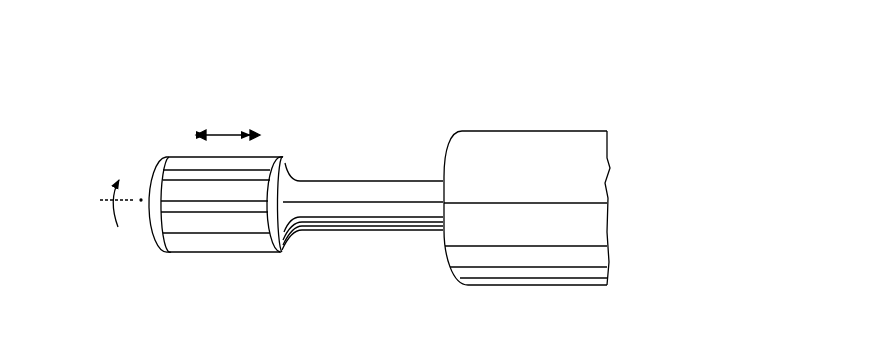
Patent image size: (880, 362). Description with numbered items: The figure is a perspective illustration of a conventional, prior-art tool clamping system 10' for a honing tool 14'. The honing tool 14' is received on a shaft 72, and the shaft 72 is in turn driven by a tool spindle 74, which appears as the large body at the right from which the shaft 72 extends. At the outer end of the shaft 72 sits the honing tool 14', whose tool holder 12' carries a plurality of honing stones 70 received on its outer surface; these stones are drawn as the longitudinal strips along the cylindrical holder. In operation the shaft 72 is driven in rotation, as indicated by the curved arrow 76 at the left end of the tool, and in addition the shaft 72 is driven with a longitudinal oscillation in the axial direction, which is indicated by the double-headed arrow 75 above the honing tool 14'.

The tool clamping system 10' is at (416, 182).
The tool holder 12' is at (272, 204).
The honing tool 14' is at (235, 244).
The honing stones 70 is at (192, 240).
The shaft 72 is at (362, 190).
The tool spindle 74 is at (578, 153).
The arrow 75 is at (226, 135).
The arrow 76 is at (105, 190).